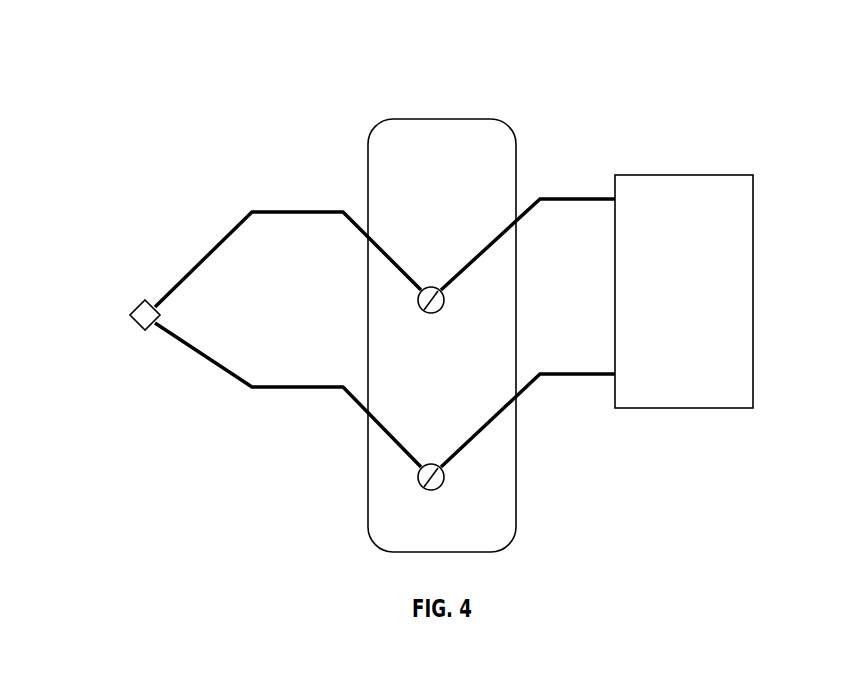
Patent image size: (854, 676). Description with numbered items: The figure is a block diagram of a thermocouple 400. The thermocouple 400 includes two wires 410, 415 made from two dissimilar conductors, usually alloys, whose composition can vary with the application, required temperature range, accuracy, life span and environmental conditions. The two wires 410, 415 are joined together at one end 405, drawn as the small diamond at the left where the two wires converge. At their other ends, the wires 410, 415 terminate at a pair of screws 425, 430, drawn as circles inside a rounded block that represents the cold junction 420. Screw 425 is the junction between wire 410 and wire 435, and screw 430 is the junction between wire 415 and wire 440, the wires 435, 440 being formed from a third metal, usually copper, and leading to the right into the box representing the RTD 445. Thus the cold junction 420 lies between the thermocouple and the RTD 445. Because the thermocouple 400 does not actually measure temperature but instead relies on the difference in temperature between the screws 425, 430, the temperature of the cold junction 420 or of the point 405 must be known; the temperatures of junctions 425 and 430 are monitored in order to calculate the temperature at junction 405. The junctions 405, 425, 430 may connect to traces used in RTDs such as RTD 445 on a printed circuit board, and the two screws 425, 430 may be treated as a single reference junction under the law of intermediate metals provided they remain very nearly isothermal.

The thermocouple 400 is at (681, 77).
The end (junction) 405 is at (137, 308).
The wire 410 is at (199, 262).
The wire 415 is at (209, 363).
The cold junction 420 is at (368, 171).
The screw (junction) 425 is at (432, 287).
The screw (junction) 430 is at (432, 464).
The wire 435 is at (560, 197).
The wire 440 is at (527, 391).
The RTD 445 is at (700, 304).